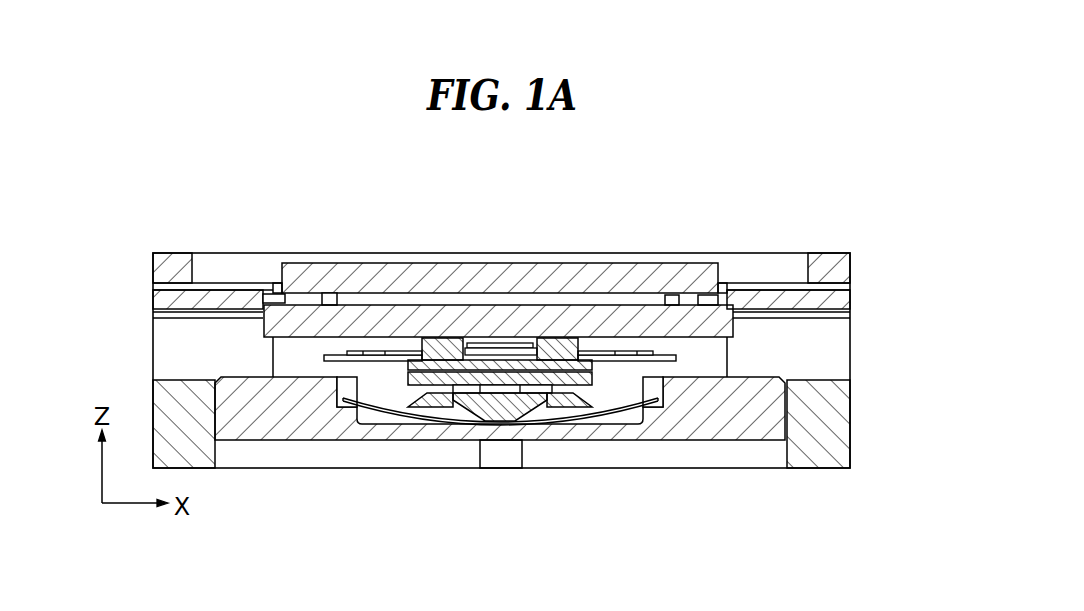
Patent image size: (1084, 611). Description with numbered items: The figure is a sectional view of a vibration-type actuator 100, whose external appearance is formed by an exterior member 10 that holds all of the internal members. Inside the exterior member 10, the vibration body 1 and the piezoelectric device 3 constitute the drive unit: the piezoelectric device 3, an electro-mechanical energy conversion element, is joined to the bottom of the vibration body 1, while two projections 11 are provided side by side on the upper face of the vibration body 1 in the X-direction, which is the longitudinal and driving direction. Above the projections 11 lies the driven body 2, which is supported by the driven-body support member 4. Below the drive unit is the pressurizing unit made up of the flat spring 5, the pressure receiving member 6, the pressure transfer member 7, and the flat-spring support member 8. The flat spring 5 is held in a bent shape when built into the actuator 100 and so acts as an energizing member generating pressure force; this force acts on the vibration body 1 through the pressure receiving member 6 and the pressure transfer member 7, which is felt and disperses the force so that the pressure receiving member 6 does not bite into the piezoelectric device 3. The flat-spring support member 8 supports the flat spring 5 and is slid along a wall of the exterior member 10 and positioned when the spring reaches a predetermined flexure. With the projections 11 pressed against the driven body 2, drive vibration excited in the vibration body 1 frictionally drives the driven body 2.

The vibration-type actuator 100 is at (759, 189).
The exterior member 10 is at (838, 343).
The driven-body support member 4 is at (505, 273).
The driven body 2 is at (410, 313).
The flat-spring support member 8 is at (278, 422).
The pressure receiving member 6 is at (503, 415).
The vibration body 1 is at (587, 350).
The projections 11 is at (445, 340).
The piezoelectric device 3 is at (553, 368).
The pressure transfer member 7 is at (456, 383).
The flat spring 5 is at (612, 405).